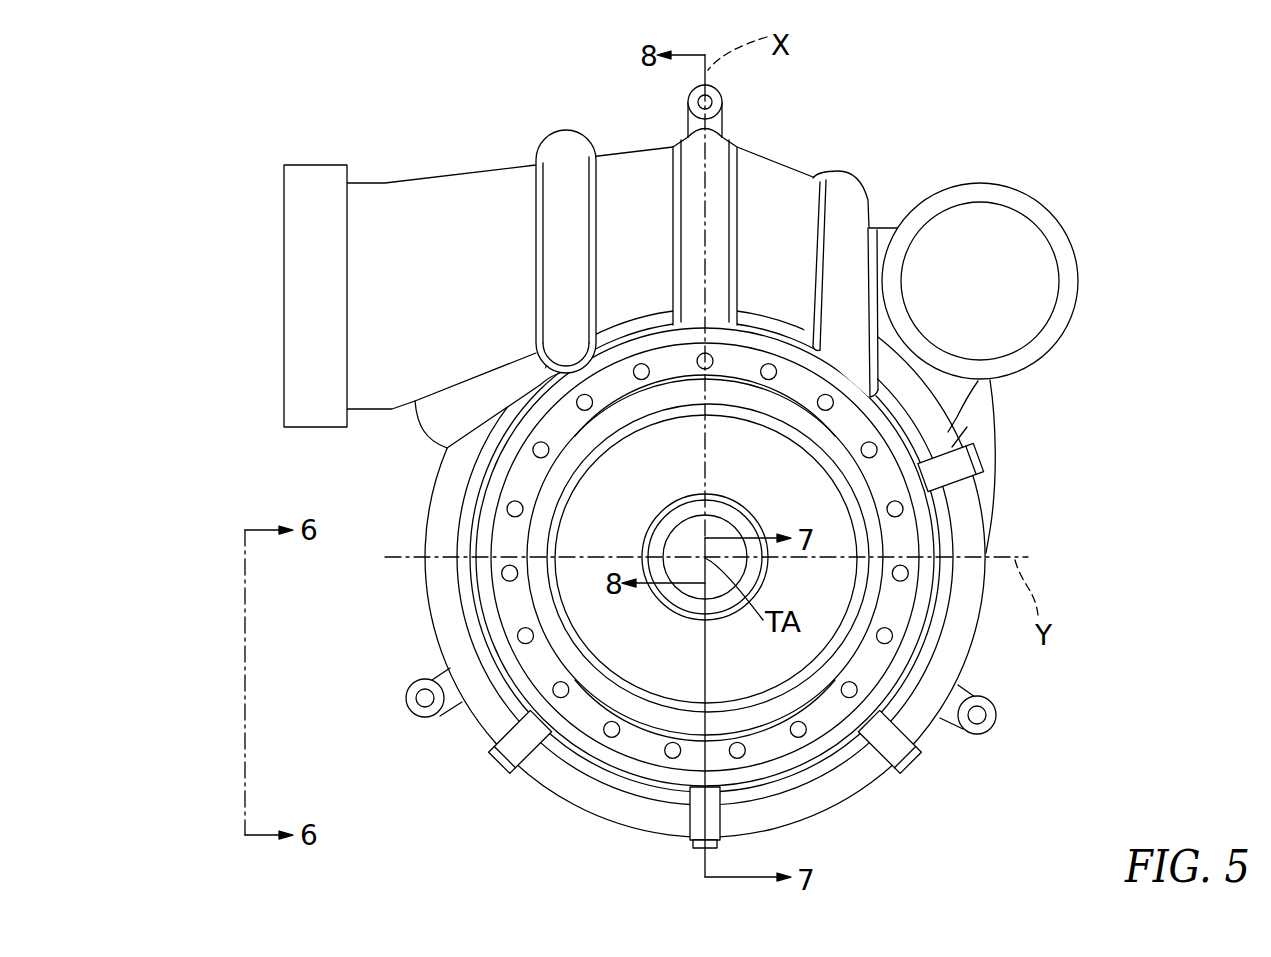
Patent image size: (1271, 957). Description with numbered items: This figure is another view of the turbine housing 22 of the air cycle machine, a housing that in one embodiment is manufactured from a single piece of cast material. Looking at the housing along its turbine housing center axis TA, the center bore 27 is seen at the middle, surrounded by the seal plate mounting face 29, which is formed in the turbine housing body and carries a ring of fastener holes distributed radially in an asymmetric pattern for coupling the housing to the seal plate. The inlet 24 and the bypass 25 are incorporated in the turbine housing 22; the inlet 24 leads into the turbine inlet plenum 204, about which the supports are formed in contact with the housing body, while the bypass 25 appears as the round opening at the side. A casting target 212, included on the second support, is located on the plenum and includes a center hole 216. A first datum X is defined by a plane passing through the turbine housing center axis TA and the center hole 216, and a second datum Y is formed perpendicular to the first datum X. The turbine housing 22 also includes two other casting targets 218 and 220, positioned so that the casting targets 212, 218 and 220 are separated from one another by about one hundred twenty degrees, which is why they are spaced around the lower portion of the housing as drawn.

The turbine housing 22 is at (406, 122).
The inlet 24 is at (283, 301).
The bypass 25 is at (1010, 287).
The center bore 27 is at (653, 525).
The seal plate mounting face 29 is at (920, 807).
The turbine inlet plenum 204 is at (628, 157).
The casting target 212 is at (721, 107).
The center hole 216 is at (714, 99).
The casting target 218 is at (410, 700).
The casting target 220 is at (992, 715).